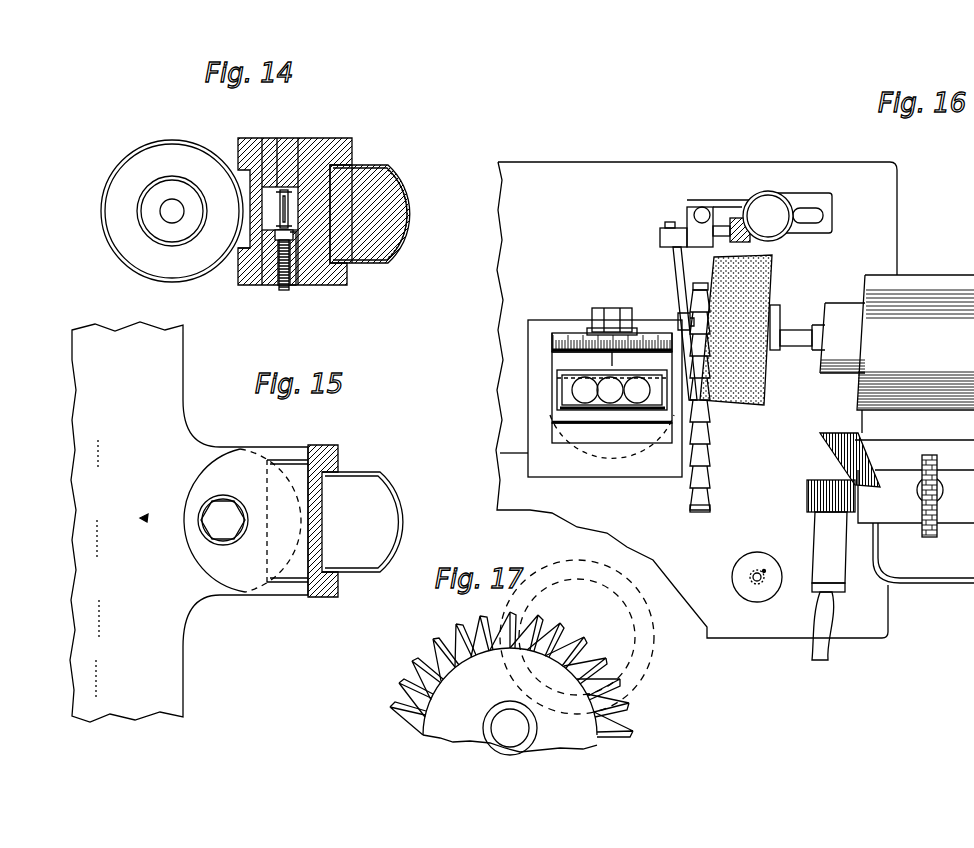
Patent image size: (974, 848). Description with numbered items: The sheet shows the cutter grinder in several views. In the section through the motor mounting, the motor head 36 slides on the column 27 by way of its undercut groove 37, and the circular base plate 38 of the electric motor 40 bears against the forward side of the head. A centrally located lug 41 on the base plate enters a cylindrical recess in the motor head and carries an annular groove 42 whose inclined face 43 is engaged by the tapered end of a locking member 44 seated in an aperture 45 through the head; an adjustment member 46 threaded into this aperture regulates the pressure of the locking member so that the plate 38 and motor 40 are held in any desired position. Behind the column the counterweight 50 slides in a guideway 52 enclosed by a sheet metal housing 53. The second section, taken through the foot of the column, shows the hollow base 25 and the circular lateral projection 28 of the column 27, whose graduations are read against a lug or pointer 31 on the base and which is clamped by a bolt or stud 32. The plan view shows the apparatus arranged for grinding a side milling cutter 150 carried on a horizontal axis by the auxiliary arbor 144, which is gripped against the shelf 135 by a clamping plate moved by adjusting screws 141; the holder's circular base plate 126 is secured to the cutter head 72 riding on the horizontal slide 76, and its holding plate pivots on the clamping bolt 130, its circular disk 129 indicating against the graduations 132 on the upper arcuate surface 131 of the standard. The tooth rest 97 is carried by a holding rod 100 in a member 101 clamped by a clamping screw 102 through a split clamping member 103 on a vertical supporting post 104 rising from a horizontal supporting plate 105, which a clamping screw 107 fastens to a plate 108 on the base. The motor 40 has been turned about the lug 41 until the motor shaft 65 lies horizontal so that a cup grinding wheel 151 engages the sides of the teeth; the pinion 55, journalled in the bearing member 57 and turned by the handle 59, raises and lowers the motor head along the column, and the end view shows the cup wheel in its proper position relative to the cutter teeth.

In FIG. 15, the hollow base 25 is at (95, 342).
In FIG. 16, the hollow base 25 is at (607, 170).
In FIG. 15, the grinder head or column 27 is at (330, 447).
In FIG. 15, the lateral projection 28 is at (268, 458).
In FIG. 15, the lug or pointer 31 is at (141, 516).
In FIG. 15, the bolt or stud 32 is at (220, 516).
In FIG. 14, the motor head 36 is at (271, 140).
In FIG. 14, the undercut groove 37 is at (307, 153).
In FIG. 14, the circular base plate 38 is at (240, 150).
In FIG. 14, the electric motor 40 is at (176, 148).
In FIG. 16, the electric motor 40 is at (938, 285).
In FIG. 14, the lug 41 is at (245, 272).
In FIG. 14, the annular groove 42 is at (289, 150).
In FIG. 14, the inclined face 43 is at (300, 157).
In FIG. 14, the locking member 44 is at (296, 280).
In FIG. 14, the aperture 45 is at (277, 285).
In FIG. 14, the adjustment member 46 is at (284, 293).
In FIG. 16, the adjustment member 46 is at (928, 540).
In FIG. 14, the counterweight 50 is at (405, 208).
In FIG. 14, the recess or guideway 52 is at (360, 172).
In FIG. 14, the sheet metal housing 53 is at (395, 172).
In FIG. 15, the sheet metal housing 53 is at (385, 482).
In FIG. 16, the pinion 55 is at (807, 496).
In FIG. 16, the bearing member 57 is at (851, 438).
In FIG. 16, the handle 59 is at (845, 587).
In FIG. 16, the motor shaft 65 is at (790, 330).
In FIG. 16, the cutter head 72 is at (540, 373).
In FIG. 16, the horizontal slide 76 is at (512, 398).
In FIG. 16, the tooth rest 97 is at (686, 330).
In FIG. 16, the holding rod 100 is at (674, 264).
In FIG. 16, the member 101 is at (662, 236).
In FIG. 16, the clamping screw 102 is at (740, 218).
In FIG. 16, the split clamping member 103 is at (700, 205).
In FIG. 16, the vertical supporting post 104 is at (696, 212).
In FIG. 16, the horizontal supporting plate 105 is at (833, 200).
In FIG. 16, the clamping screw 107 is at (766, 200).
In FIG. 16, the plate 108 is at (770, 205).
In FIG. 16, the circular base plate 126 is at (640, 398).
In FIG. 16, the circular disk 129 is at (553, 352).
In FIG. 16, the clamping bolt 130 is at (607, 315).
In FIG. 16, the upper arcuate surface 131 is at (560, 334).
In FIG. 16, the graduations 132 is at (553, 340).
In FIG. 16, the shelf 135 is at (570, 400).
In FIG. 16, the adjusting screws 141 is at (600, 398).
In FIG. 16, the auxiliary arbor 144 is at (557, 392).
In FIG. 16, the side milling cutter 150 is at (710, 452).
In FIG. 17, the side milling cutter 150 is at (605, 713).
In FIG. 16, the cup grinding wheel 151 is at (773, 270).
In FIG. 17, the cup grinding wheel 151 is at (650, 660).